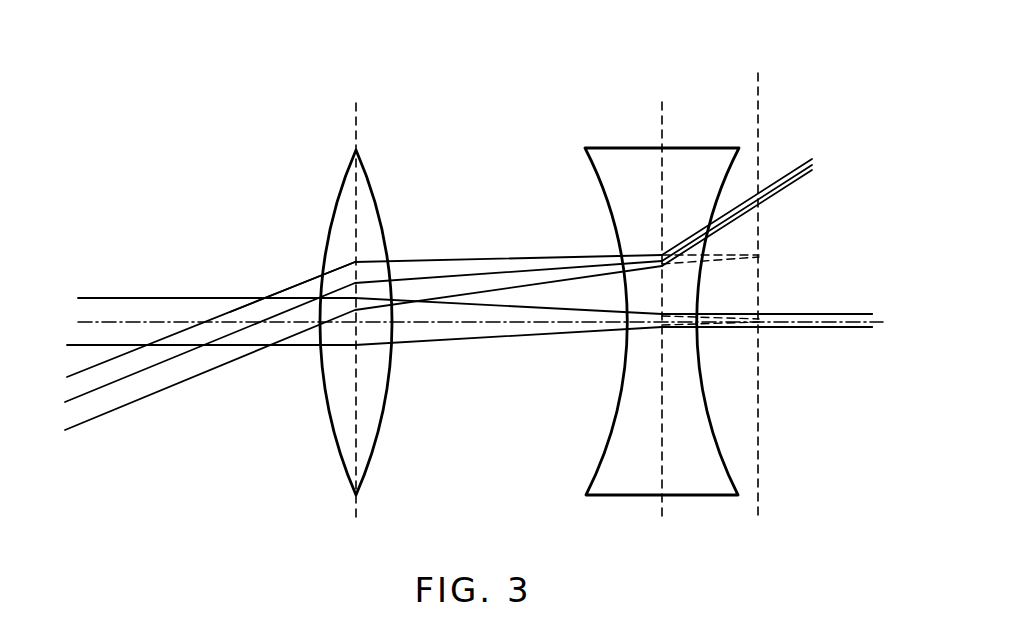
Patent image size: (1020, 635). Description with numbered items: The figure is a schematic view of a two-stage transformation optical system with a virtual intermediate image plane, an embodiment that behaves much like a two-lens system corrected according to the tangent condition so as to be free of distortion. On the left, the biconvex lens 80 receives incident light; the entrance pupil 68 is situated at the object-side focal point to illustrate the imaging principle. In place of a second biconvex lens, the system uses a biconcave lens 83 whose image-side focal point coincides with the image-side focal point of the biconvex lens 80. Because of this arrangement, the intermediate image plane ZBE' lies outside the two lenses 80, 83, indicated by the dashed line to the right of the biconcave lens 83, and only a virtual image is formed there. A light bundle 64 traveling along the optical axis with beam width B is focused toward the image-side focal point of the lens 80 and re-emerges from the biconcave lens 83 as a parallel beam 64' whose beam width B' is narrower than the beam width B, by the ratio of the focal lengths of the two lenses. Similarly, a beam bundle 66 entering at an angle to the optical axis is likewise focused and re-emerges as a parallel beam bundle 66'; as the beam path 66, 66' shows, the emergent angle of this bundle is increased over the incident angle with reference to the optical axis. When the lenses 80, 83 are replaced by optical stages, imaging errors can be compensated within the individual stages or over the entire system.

The light bundle 64 is at (469, 292).
The beam bundle 66 is at (292, 256).
The entrance pupil 68 is at (187, 352).
The biconvex lens 80 is at (372, 197).
The biconcave lens 83 is at (627, 160).
The emergent light bundle 64' is at (767, 362).
The parallel beam bundle 66' is at (744, 183).
The beam width B is at (152, 323).
The beam width B' is at (854, 314).
The intermediate image plane ZBE' is at (758, 277).